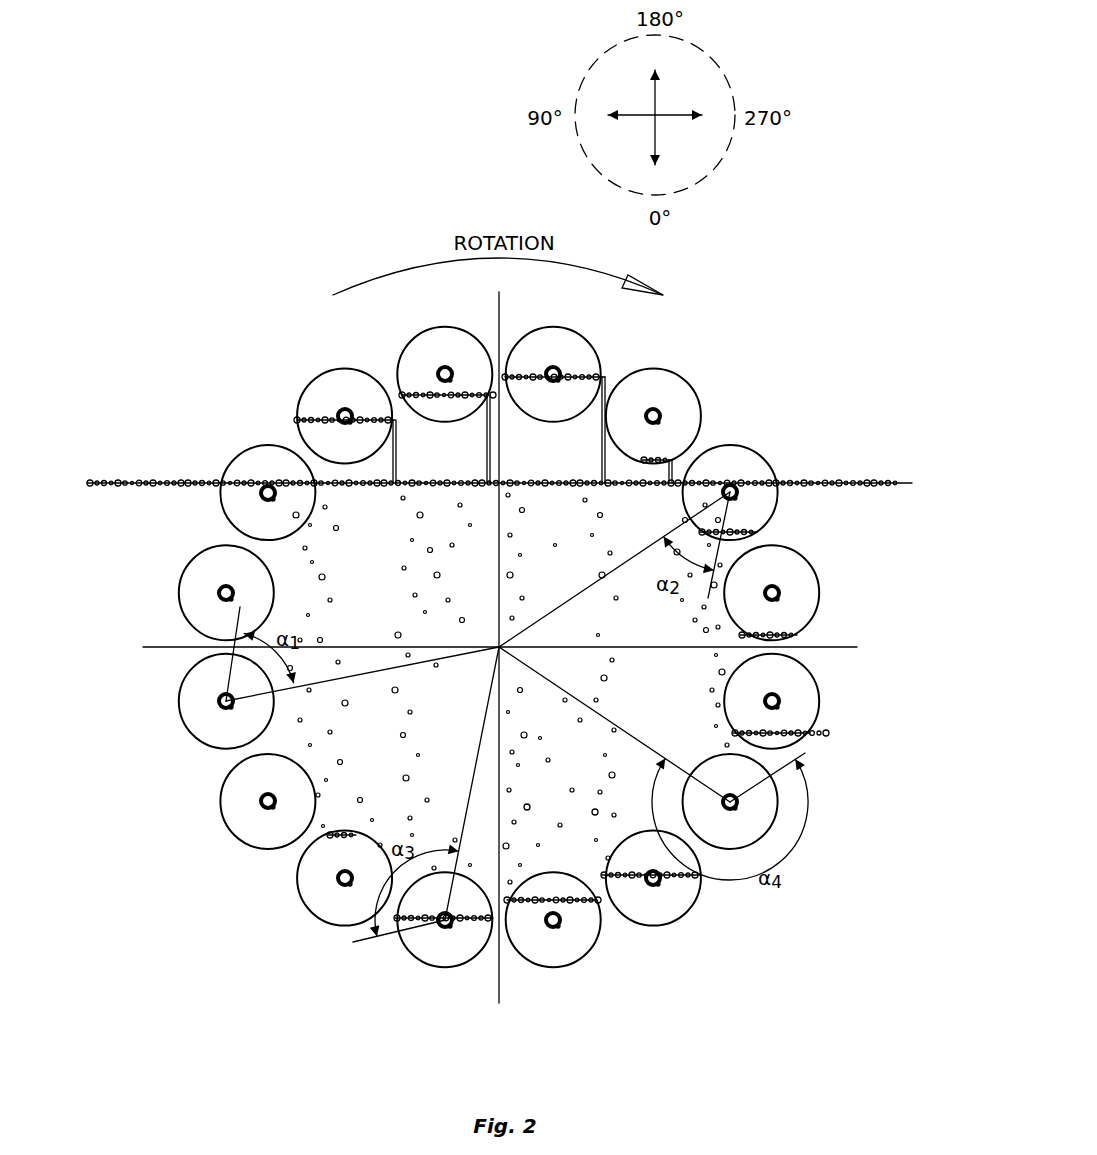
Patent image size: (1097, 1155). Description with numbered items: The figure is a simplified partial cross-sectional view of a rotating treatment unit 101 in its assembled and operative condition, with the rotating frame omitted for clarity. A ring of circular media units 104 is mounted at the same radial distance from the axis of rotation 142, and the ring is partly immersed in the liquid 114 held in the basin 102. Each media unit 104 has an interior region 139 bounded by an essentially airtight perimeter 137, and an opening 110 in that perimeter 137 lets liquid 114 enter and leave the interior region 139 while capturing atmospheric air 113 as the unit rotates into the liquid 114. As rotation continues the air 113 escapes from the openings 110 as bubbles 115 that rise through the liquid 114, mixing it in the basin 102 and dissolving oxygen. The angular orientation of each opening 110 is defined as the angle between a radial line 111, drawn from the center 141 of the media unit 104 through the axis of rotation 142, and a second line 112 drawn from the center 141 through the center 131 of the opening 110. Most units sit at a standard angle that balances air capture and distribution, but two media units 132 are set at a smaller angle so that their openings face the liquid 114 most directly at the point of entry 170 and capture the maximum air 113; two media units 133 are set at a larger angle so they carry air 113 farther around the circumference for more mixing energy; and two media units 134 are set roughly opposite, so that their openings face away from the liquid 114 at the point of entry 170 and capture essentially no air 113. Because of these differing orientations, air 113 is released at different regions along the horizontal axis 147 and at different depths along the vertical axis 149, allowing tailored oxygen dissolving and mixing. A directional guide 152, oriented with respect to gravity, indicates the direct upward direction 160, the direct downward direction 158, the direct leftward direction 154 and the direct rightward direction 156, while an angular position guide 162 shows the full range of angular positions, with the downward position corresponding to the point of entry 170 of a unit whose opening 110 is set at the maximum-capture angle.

The rotating treatment unit 101 is at (287, 270).
The basin 102 is at (738, 920).
The media unit 104 is at (712, 387).
The opening 110 is at (432, 649).
The radial line 111 is at (365, 677).
The line 112 is at (237, 618).
The atmospheric air 113 is at (330, 393).
The liquid 114 is at (162, 518).
The bubbles 115 is at (593, 810).
The center of the opening 131 is at (191, 701).
The media unit oriented at angle α2 132 is at (772, 463).
The media unit oriented at angle α3 133 is at (543, 327).
The media unit oriented at angle α4 134 is at (233, 453).
The perimeter 137 is at (705, 391).
The interior region 139 is at (658, 388).
The center of the media unit 141 is at (218, 700).
The axis of rotation 142 is at (497, 646).
The horizontal axis 147 is at (822, 649).
The vertical axis 149 is at (497, 320).
The directional guide 152 is at (615, 111).
The direct leftward direction 154 is at (647, 117).
The direct rightward direction 156 is at (673, 118).
The direct downward direction 158 is at (657, 133).
The direct upward direction 160 is at (655, 100).
The angular position guide 162 is at (713, 57).
The point of entry 170 is at (752, 431).